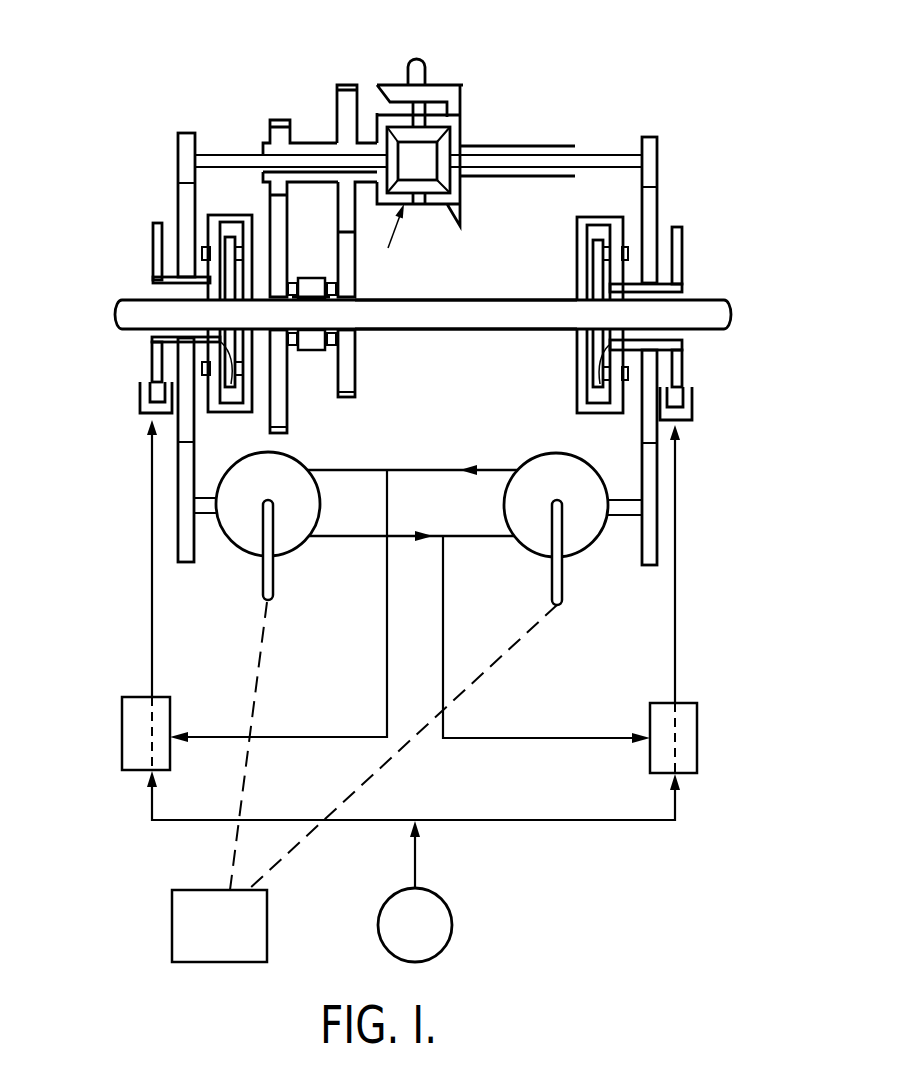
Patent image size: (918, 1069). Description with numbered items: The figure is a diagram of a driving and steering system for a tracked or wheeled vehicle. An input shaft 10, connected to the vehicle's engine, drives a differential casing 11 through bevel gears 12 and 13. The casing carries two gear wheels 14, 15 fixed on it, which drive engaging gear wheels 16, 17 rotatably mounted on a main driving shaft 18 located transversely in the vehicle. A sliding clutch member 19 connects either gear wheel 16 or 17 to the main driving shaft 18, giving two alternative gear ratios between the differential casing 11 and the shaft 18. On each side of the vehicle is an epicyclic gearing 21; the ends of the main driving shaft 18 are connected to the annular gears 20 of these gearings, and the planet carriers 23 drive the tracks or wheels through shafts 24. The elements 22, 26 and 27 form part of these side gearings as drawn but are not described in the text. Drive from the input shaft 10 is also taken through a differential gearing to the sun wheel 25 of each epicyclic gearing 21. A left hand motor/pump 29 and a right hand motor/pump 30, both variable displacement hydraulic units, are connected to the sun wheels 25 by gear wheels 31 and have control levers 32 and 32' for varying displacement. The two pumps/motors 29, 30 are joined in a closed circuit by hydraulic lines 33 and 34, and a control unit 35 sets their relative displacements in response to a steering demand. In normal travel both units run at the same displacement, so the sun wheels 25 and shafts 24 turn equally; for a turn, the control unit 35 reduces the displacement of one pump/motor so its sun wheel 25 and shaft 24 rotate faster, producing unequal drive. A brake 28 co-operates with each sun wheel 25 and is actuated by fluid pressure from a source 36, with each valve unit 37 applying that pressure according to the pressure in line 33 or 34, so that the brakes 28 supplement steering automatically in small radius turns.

The input shaft 10 is at (427, 63).
The differential casing 11 is at (384, 238).
The bevel gear 12 is at (440, 93).
The bevel gear 13 is at (452, 110).
The gear wheel 14 is at (349, 100).
The gear wheel 15 is at (281, 128).
The gear wheel 16 is at (345, 370).
The gear wheel 17 is at (278, 397).
The main driving shaft 18 is at (470, 313).
The sliding clutch member 19 is at (312, 285).
The annular gear 20 is at (230, 216).
The epicyclic gearing 21 is at (162, 166).
The clutch plate 22 is at (212, 234).
The planet carrier 23 is at (230, 292).
The shaft 24 is at (148, 315).
The sun wheel 25 is at (230, 372).
The lever 26 is at (186, 203).
The bracket 27 is at (155, 393).
The brake 28 is at (150, 410).
The left hand motor/pump 29 is at (292, 537).
The right hand motor/pump 30 is at (535, 545).
The gear wheel 31 is at (185, 535).
The control lever 32 is at (291, 579).
The control lever 32' is at (580, 579).
The hydraulic line 33 is at (394, 540).
The hydraulic line 34 is at (425, 467).
The control unit 35 is at (190, 914).
The source 36 is at (430, 923).
The valve unit 37 is at (135, 732).